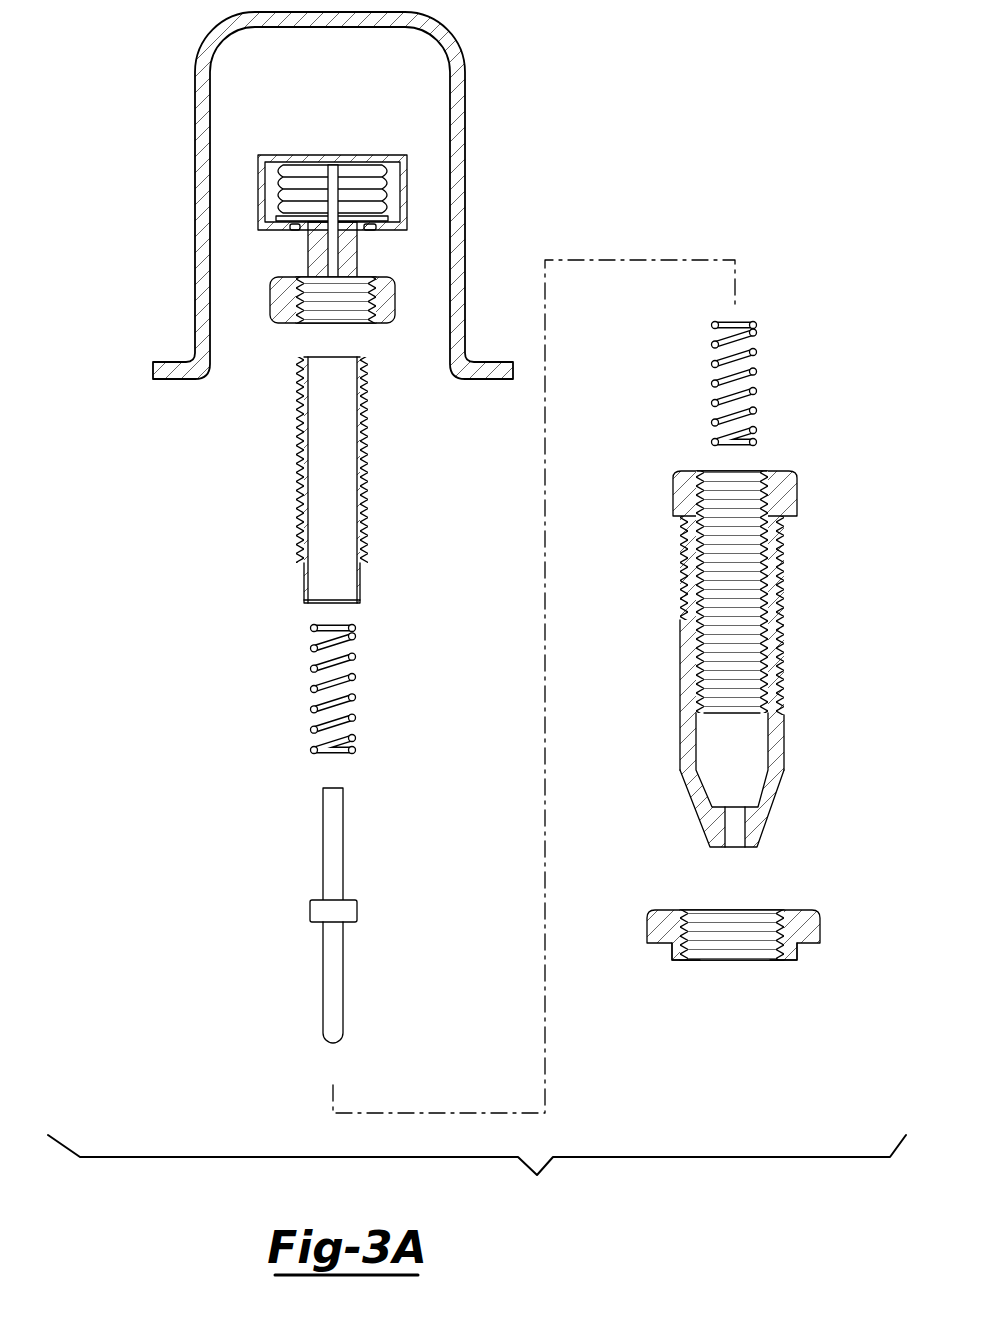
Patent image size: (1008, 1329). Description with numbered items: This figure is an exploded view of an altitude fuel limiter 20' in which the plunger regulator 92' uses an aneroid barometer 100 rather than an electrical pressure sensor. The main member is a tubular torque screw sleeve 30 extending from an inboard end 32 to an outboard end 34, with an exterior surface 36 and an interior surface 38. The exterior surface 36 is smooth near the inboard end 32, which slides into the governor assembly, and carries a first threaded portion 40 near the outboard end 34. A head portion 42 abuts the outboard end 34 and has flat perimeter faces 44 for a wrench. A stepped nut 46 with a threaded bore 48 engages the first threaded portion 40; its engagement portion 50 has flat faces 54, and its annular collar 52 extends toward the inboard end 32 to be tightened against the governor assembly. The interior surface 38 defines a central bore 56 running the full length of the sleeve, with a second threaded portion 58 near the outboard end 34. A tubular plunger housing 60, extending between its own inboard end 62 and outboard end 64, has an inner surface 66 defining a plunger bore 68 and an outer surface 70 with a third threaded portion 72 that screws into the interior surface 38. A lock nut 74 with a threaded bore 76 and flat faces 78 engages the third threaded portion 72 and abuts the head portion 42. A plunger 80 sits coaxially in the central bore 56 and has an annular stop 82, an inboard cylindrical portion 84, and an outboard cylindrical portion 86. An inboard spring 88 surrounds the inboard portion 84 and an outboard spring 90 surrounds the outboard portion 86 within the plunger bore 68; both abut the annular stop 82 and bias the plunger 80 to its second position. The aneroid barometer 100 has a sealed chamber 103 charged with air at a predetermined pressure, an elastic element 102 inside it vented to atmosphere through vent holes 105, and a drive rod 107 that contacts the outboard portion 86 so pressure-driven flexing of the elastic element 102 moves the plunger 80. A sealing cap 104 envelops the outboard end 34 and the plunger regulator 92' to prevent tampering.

The altitude fuel limiter 20' is at (477, 1171).
The torque screw sleeve 30 is at (711, 649).
The inboard end 32 is at (708, 836).
The outboard end 34 is at (762, 449).
The exterior surface 36 is at (704, 659).
The interior surface 38 is at (765, 757).
The first threaded portion 40 is at (688, 555).
The head portion 42 is at (677, 489).
The flat perimeter faces 44 is at (673, 497).
The stepped nut 46 is at (738, 940).
The threaded bore 48 is at (738, 930).
The engagement portion 50 is at (640, 905).
The annular collar 52 is at (680, 958).
The flat faces 54 is at (822, 930).
The central bore 56 is at (725, 755).
The second threaded portion 58 is at (700, 590).
The plunger housing 60 is at (329, 507).
The inboard end 62 is at (329, 827).
The outboard end 64 is at (303, 507).
The inner surface 66 is at (359, 615).
The plunger bore 68 is at (330, 512).
The outer surface 70 is at (296, 538).
The third threaded portion 72 is at (296, 450).
The lock nut 74 is at (368, 318).
The threaded bore 76 is at (333, 305).
The flat faces 78 is at (395, 300).
The plunger 80 is at (335, 915).
The annular stop 82 is at (285, 896).
The inboard cylindrical portion 84 is at (285, 931).
The outboard cylindrical portion 86 is at (285, 788).
The inboard spring 88 is at (694, 322).
The outboard spring 90 is at (285, 628).
The plunger regulator 92' is at (324, 191).
The aneroid barometer 100 is at (324, 191).
The elastic element 102 is at (367, 183).
The sealed chamber 103 is at (373, 195).
The sealing cap 104 is at (195, 68).
The vent holes 105 is at (375, 230).
The drive rod 107 is at (330, 262).